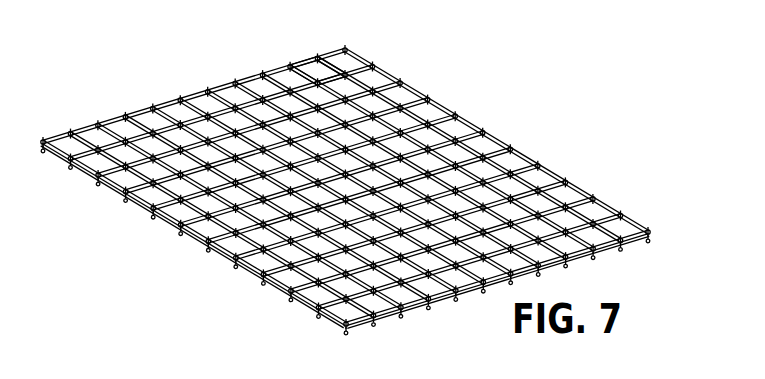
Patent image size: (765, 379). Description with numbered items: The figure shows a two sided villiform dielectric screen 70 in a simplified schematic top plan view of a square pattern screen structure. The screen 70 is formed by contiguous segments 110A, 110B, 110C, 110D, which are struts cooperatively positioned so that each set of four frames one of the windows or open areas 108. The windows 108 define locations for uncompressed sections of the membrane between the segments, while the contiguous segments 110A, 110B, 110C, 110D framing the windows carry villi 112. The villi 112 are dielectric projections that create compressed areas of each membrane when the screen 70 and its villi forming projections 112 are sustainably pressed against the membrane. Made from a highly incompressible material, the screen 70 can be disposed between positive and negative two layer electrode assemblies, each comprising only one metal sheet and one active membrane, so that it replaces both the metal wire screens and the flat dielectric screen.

The two sided villiform dielectric screen 70 is at (345, 172).
The windows 108 is at (508, 160).
The contiguous segment 110A is at (307, 58).
The contiguous segment 110B is at (330, 63).
The contiguous segment 110C is at (332, 80).
The contiguous segment 110D is at (303, 77).
The villi 112 is at (430, 98).